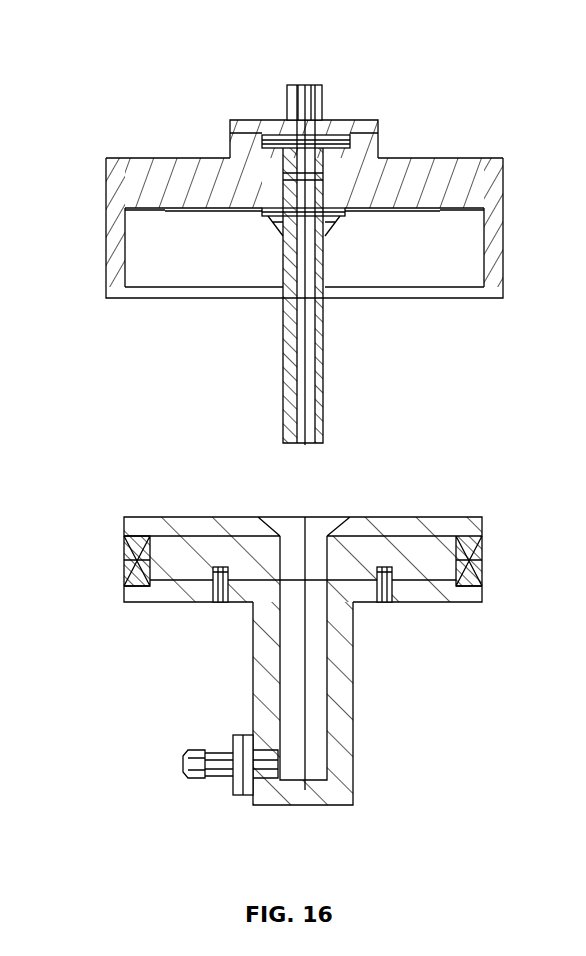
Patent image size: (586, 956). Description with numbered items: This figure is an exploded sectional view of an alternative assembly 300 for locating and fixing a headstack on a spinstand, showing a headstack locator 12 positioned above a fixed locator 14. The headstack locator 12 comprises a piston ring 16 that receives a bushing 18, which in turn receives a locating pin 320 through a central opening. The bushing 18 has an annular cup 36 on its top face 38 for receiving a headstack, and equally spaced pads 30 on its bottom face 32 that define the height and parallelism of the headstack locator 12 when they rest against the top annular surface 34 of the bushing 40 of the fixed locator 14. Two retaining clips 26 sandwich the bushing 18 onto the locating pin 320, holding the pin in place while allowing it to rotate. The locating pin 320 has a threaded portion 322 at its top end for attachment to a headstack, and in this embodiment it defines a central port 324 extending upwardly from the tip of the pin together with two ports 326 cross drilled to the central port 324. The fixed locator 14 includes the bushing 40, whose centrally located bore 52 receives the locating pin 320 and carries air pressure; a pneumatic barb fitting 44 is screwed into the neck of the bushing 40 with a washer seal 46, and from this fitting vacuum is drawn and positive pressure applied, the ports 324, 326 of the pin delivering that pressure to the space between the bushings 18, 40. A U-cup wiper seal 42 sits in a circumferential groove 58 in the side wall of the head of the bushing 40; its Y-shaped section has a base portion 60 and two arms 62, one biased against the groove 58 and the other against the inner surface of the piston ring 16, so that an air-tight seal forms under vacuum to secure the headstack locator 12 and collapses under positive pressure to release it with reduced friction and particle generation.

The assembly 300 is at (528, 120).
The headstack locator 12 is at (514, 192).
The bushing 18 is at (158, 156).
The piston ring 16 is at (503, 241).
The pads 30 is at (152, 212).
The bottom face 32 is at (410, 210).
The annular cup 36 is at (243, 120).
The threaded portion 322 is at (326, 98).
The retaining clips 26 is at (376, 142).
The ports 326 is at (283, 230).
The locating pin 320 is at (326, 352).
The top face 38 is at (455, 157).
The central port 324 is at (310, 445).
The fixed locator 14 is at (444, 636).
The top annular surface 34 is at (460, 517).
The bushing 40 is at (181, 602).
The circumferential groove 58 is at (125, 540).
The wiper seal 42 is at (125, 553).
The base portion 60 is at (482, 546).
The arms 62 is at (482, 578).
The central bore 52 is at (330, 692).
The pneumatic barb fitting 44 is at (220, 780).
The washer seal 46 is at (246, 797).